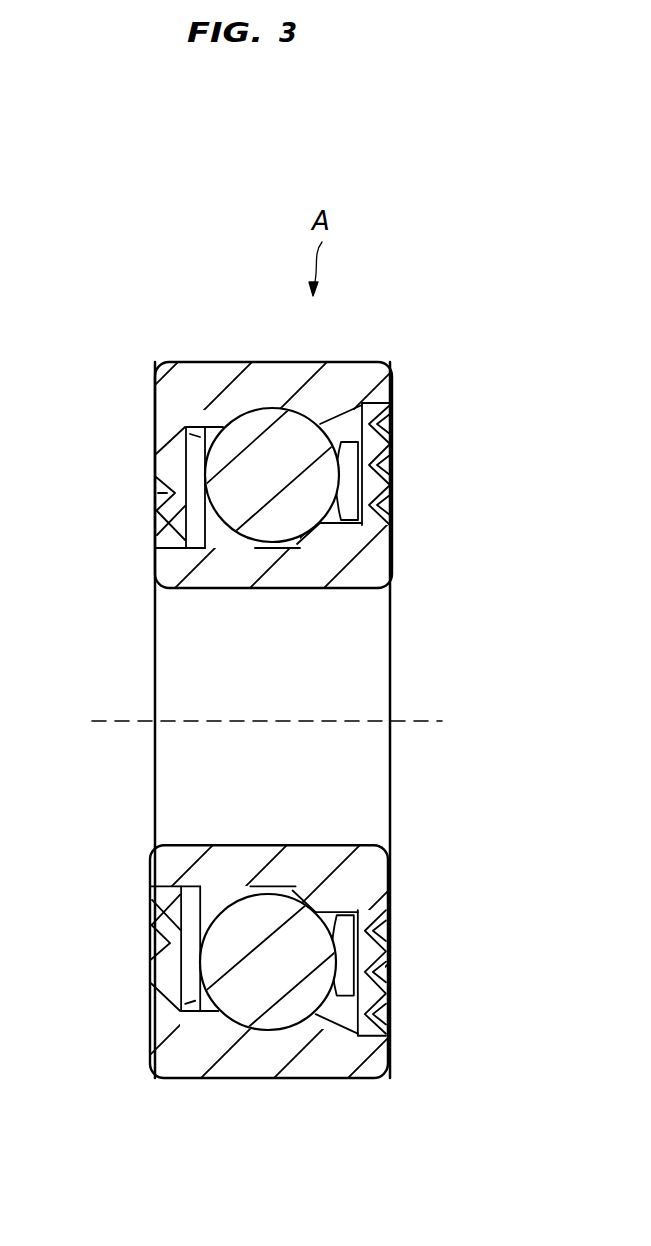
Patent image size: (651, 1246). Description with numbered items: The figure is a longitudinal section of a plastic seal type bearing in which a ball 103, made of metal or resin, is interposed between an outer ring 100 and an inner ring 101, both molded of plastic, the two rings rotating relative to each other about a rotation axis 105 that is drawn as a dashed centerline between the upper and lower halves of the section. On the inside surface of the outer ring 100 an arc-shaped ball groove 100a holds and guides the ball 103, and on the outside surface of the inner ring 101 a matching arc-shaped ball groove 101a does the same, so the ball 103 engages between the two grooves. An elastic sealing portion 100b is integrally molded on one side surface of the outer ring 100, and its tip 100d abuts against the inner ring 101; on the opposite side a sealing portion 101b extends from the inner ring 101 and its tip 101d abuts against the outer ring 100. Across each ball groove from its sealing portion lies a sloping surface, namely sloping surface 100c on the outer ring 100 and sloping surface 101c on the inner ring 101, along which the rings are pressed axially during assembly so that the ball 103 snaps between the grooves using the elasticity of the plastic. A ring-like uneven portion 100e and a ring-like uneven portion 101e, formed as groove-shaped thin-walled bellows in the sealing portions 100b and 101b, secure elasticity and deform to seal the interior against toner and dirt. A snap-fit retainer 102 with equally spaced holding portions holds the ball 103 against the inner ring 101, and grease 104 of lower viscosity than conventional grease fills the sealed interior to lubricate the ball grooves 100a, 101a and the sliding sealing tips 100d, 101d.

The outer ring 100 is at (352, 362).
The ball groove 100a is at (240, 408).
The sealing portion 100b is at (165, 493).
The sloping surface 100c is at (337, 420).
The tip of sealing portion 100d is at (168, 548).
The ring-like uneven portion 100e is at (165, 490).
The inner ring 101 is at (355, 589).
The ball groove 101a is at (272, 543).
The sealing portion 101b is at (395, 470).
The sloping surface 101c is at (218, 538).
The tip of sealing portion 101d is at (393, 407).
The ring-like uneven portion 101e is at (392, 484).
The retainer 102 is at (390, 955).
The ball 103 is at (212, 525).
The grease 104 is at (177, 430).
The rotation axis 105 is at (98, 722).